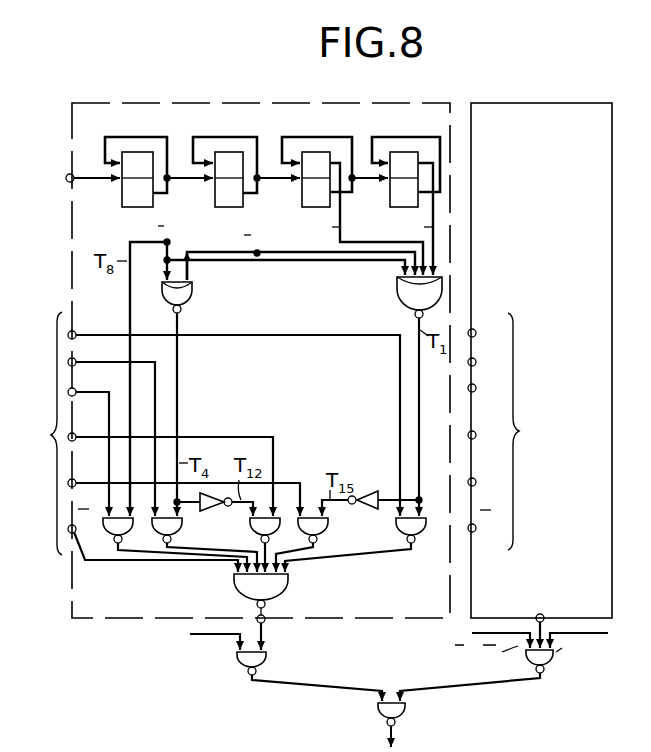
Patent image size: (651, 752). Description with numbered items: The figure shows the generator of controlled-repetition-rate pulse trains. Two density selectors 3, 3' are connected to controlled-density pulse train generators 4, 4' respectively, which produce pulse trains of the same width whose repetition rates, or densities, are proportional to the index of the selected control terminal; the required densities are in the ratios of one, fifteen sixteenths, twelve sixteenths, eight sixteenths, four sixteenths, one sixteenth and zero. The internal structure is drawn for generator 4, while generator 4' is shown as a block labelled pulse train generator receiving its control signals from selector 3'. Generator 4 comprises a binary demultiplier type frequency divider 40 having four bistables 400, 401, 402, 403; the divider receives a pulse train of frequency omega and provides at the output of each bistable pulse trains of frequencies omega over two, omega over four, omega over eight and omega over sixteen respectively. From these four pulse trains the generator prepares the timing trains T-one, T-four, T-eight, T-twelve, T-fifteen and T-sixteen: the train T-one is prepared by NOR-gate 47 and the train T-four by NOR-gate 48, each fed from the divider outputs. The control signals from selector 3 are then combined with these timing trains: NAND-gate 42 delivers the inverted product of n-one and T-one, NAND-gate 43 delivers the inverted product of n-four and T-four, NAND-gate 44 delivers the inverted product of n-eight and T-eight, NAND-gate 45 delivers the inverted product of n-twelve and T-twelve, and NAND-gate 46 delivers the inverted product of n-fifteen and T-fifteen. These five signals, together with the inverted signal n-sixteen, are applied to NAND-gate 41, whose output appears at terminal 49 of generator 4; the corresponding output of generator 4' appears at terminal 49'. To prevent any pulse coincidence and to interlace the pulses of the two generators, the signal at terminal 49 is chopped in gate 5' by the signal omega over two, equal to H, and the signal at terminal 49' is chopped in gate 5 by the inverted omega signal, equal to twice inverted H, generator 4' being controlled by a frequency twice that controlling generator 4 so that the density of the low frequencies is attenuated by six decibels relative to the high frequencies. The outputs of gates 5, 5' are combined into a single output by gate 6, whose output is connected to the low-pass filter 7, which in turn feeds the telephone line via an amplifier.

The density selector 3 is at (74, 446).
The density selector 3' is at (528, 431).
The controlled-density pulse train generator 4 is at (261, 347).
The controlled-density pulse train generator 4' is at (541, 345).
The gate 5 is at (514, 668).
The gate 5' is at (273, 668).
The gate 6 is at (388, 698).
The low-pass filter 7 is at (400, 730).
The frequency divider 40 is at (282, 133).
The NAND-gate 41 is at (288, 595).
The NAND-gate 42 is at (416, 542).
The NAND-gate 43 is at (176, 528).
The NAND-gate 44 is at (106, 541).
The NAND-gate 45 is at (250, 528).
The NAND-gate 46 is at (322, 528).
The NOR-gate 47 is at (396, 291).
The NOR-gate 48 is at (188, 294).
The terminal 49 is at (287, 630).
The terminal 49' is at (554, 614).
The bistable 400 is at (126, 204).
The bistable 401 is at (218, 204).
The bistable 402 is at (306, 204).
The bistable 403 is at (394, 204).